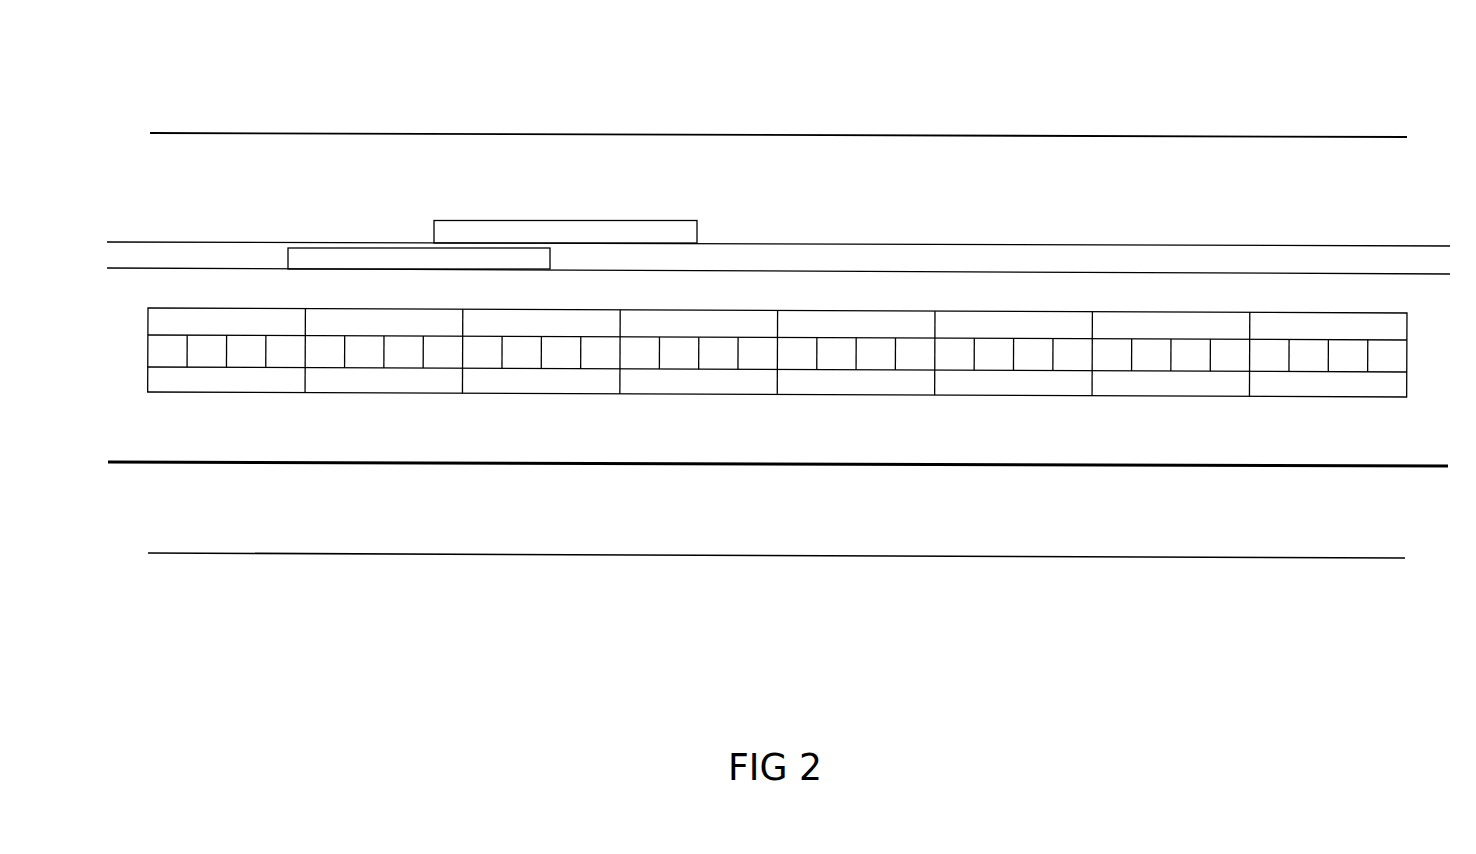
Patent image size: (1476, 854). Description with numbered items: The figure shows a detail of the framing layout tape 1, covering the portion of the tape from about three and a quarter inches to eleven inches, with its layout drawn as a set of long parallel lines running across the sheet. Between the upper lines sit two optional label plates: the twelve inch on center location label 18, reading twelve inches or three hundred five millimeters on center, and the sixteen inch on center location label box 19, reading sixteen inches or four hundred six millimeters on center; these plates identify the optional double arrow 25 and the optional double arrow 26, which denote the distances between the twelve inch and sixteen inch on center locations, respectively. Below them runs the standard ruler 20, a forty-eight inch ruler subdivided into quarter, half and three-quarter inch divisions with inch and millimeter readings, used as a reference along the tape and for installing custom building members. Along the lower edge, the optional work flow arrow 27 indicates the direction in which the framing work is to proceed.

The framing layout tape 1 is at (717, 130).
The 12 inch on center location label 18 is at (374, 242).
The 16 inch on center location label box 19 is at (495, 220).
The standard ruler 20 is at (447, 350).
The double arrow for 12 inch on center location 25 is at (857, 280).
The double arrow for 16 inch on center location 26 is at (986, 243).
The work flow arrow 27 is at (697, 465).